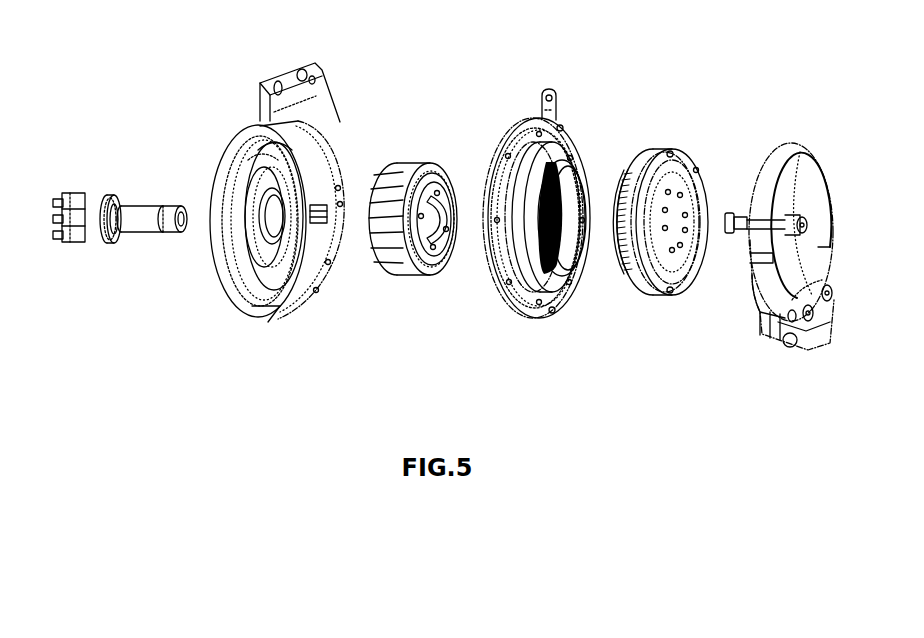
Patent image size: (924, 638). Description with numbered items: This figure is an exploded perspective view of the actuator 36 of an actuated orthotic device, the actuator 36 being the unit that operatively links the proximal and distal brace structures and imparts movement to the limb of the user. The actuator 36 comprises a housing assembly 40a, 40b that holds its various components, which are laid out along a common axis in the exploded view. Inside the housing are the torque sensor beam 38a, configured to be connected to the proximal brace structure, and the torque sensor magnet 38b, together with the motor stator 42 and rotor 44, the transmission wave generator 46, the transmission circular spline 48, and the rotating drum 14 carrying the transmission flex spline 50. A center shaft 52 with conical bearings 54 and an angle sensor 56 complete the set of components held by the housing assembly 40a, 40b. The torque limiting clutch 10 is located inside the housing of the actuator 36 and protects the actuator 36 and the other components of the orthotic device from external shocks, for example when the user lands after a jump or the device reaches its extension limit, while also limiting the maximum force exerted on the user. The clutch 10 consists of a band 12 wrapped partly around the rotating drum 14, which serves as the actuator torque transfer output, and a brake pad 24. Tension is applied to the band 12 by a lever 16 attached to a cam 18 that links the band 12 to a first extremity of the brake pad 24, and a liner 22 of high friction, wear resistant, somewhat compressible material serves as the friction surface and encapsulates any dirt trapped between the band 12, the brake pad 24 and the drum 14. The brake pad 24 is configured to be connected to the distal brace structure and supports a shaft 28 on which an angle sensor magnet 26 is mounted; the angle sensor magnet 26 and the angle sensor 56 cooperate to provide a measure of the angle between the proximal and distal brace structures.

The torque limiting clutch 10 is at (802, 108).
The band 12 is at (773, 163).
The rotating drum 14 is at (668, 150).
The lever 16 is at (765, 292).
The cam 18 is at (797, 318).
The liner 22 is at (813, 173).
The brake pad 24 is at (832, 306).
The angle sensor magnet 26 is at (745, 228).
The shaft 28 is at (780, 223).
The actuator 36 is at (53, 362).
The torque sensor beam 38a is at (318, 117).
The torque sensor magnet 38b is at (556, 108).
The housing assembly 40a is at (238, 160).
The housing assembly 40b is at (517, 295).
The motor stator 42 is at (278, 290).
The rotor 44 is at (393, 258).
The transmission wave generator 46 is at (438, 265).
The transmission circular spline 48 is at (557, 251).
The transmission flex spline 50 is at (620, 232).
The center shaft 52 is at (147, 228).
The conical bearings 54 is at (106, 228).
The angle sensor 56 is at (73, 195).